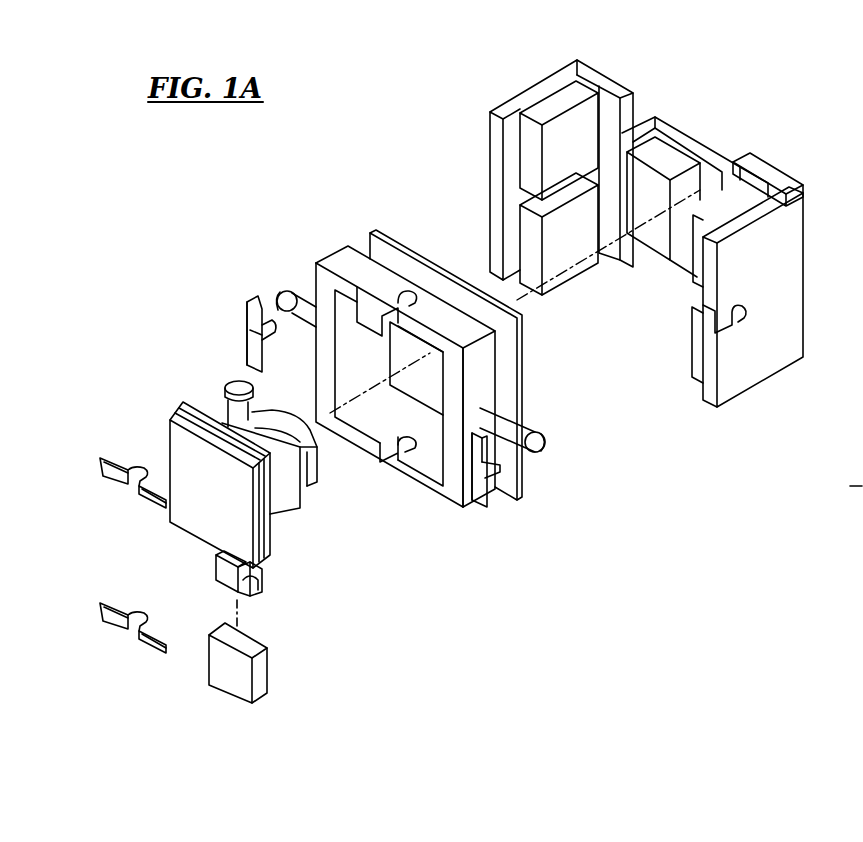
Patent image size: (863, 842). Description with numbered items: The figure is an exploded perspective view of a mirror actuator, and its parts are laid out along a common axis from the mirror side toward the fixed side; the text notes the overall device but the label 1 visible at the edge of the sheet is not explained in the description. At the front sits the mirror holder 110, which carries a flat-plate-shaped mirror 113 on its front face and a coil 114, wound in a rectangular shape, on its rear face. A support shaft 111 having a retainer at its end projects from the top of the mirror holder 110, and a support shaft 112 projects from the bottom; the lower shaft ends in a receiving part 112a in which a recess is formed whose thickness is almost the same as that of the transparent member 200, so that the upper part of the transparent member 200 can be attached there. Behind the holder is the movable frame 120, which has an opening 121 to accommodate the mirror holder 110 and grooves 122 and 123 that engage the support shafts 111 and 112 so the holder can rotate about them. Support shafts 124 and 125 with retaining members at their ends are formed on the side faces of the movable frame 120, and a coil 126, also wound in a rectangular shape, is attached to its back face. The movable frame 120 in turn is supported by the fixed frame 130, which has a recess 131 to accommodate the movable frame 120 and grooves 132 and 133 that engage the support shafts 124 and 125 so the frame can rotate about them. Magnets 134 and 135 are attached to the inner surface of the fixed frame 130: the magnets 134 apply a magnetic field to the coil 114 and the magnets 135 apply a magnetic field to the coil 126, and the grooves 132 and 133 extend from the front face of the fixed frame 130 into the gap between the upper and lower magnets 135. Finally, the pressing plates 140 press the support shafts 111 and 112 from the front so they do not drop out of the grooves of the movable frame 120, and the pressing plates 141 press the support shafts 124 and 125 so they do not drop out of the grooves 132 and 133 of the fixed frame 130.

The transformer 1 is at (856, 493).
The mirror holder 110 is at (290, 528).
The support shaft 111 is at (233, 388).
The support shaft 112 is at (215, 552).
The receiving part 112a is at (255, 587).
The mirror 113 is at (202, 502).
The coil 114 is at (275, 412).
The movable frame 120 is at (418, 493).
The opening 121 is at (358, 320).
The groove 122 is at (407, 290).
The groove 123 is at (394, 462).
The support shaft 124 is at (303, 285).
The support shaft 125 is at (540, 450).
The coil 126 is at (505, 383).
The fixed frame 130 is at (755, 140).
The recess 131 is at (662, 293).
The groove 132 is at (512, 190).
The groove 133 is at (733, 313).
The magnets 134 is at (700, 183).
The magnets 135 is at (560, 205).
The pressing plate 140 is at (120, 473).
The pressing plate 141 is at (250, 298).
The transparent member 200 is at (230, 697).